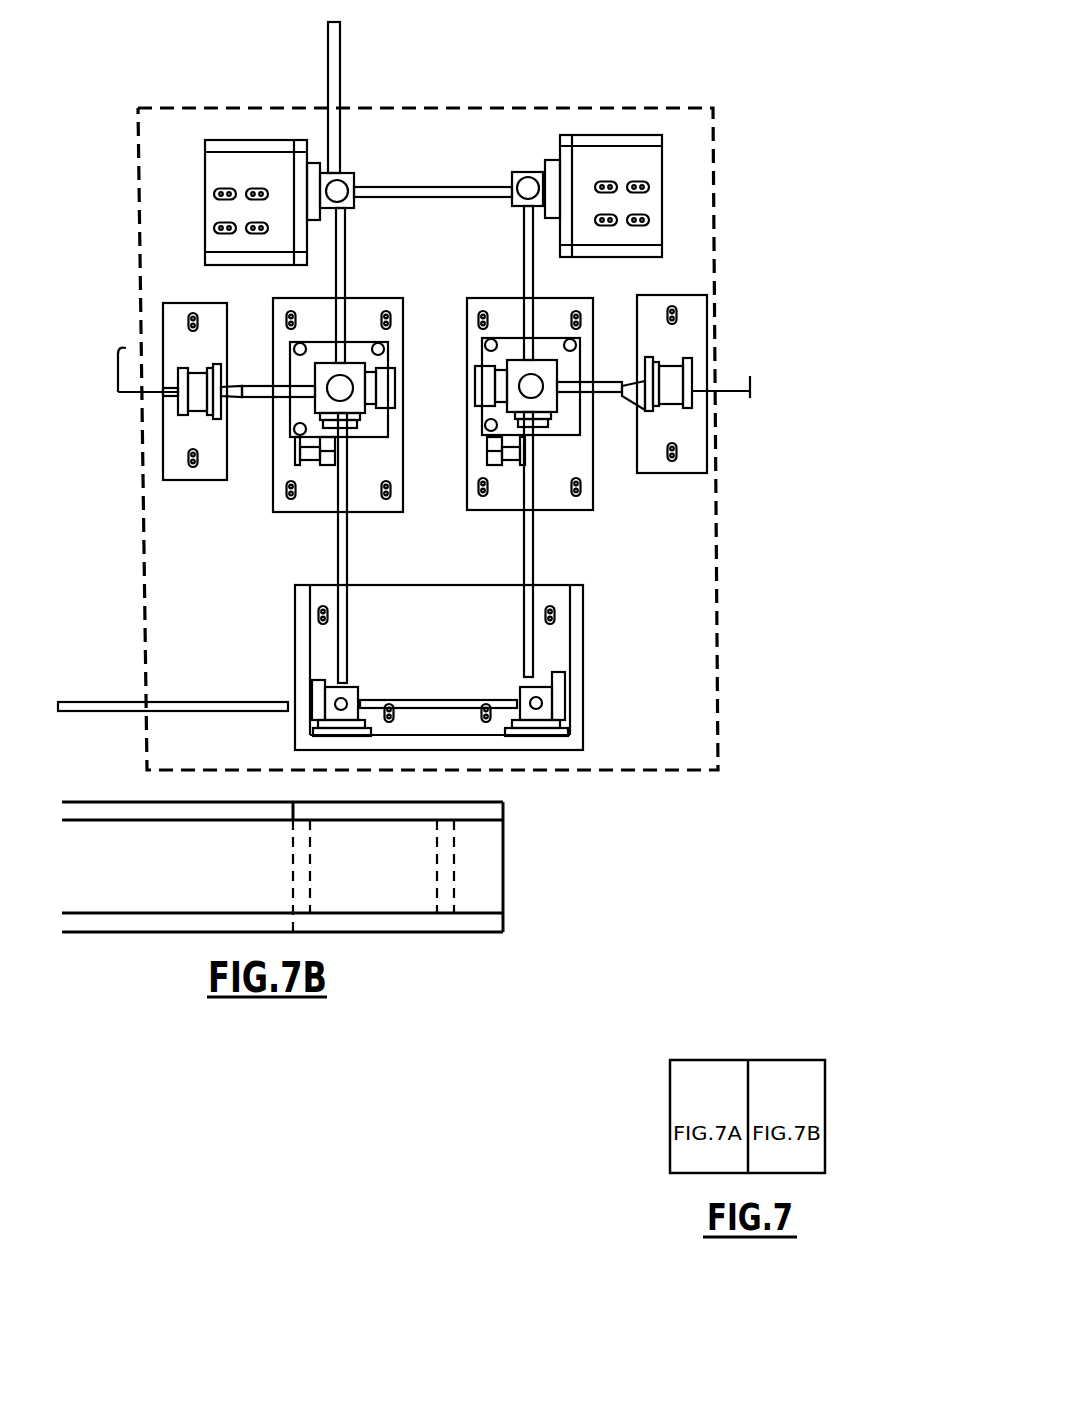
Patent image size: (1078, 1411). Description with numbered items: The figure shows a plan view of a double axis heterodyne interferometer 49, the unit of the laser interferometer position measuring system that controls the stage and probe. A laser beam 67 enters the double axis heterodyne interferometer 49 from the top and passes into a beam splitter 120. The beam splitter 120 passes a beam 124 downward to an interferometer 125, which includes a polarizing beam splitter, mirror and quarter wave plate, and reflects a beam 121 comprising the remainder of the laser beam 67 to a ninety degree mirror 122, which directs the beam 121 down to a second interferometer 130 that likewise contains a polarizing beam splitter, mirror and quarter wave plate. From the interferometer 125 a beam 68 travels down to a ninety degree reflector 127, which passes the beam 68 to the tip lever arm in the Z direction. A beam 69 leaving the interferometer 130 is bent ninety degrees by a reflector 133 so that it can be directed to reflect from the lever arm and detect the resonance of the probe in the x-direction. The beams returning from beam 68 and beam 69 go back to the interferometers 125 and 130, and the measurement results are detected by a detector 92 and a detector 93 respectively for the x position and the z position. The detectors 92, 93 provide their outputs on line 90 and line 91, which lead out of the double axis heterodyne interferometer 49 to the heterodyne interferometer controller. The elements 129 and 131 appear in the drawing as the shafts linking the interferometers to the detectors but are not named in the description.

The double axis heterodyne interferometer 49 is at (585, 106).
The laser beam 67 is at (340, 62).
The beam 68 is at (338, 565).
The beam 69 is at (540, 568).
The line 90 is at (118, 372).
The line 91 is at (733, 378).
The detector 92 is at (196, 416).
The detector 93 is at (672, 405).
The beam splitter 120 is at (347, 176).
The beam 121 is at (445, 187).
The 90 degree mirror 122 is at (518, 206).
The beam 124 is at (345, 272).
The interferometer 125 is at (370, 432).
The 90 degree reflector 127 is at (355, 687).
The shaft 129 is at (262, 398).
The interferometer 130 is at (555, 338).
The shaft 131 is at (600, 382).
The reflector 133 is at (540, 702).